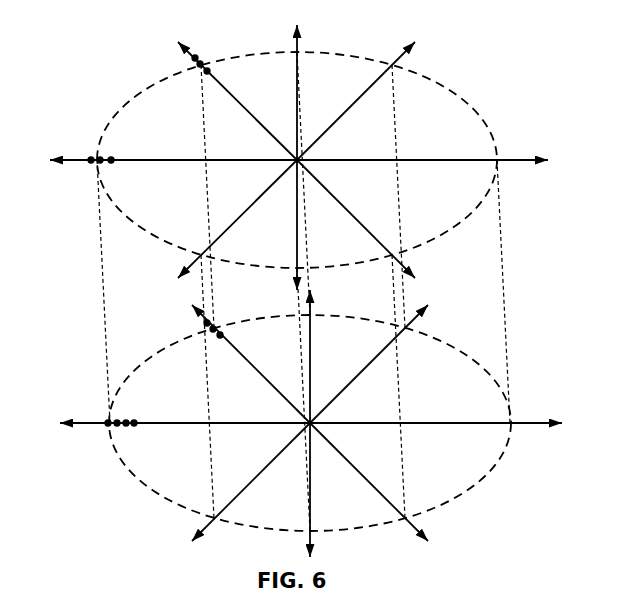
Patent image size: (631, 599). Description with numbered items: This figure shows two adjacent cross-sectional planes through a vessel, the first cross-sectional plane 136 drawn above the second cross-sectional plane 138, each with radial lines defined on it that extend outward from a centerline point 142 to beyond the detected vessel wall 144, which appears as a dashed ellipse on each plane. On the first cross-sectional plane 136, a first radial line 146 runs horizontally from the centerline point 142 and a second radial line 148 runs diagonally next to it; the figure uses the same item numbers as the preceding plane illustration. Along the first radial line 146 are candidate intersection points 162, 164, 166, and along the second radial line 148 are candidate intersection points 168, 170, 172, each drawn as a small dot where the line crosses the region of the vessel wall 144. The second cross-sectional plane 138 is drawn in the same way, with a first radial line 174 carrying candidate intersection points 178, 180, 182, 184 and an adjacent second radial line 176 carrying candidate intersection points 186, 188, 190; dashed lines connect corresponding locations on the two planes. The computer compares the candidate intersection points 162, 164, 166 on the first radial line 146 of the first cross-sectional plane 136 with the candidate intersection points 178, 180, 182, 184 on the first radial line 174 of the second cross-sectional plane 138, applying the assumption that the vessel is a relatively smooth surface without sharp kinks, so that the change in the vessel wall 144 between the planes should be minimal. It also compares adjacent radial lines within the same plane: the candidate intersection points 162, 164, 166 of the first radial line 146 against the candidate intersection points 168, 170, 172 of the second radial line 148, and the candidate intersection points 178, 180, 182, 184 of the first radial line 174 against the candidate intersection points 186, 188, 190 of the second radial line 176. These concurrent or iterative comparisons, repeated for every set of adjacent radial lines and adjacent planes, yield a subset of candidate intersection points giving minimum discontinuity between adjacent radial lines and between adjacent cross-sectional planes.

The first cross-sectional plane 136 is at (487, 45).
The second cross-sectional plane 138 is at (495, 325).
The centerline point 142 is at (302, 158).
The vessel wall 144 is at (474, 106).
The first radial line 146 is at (78, 163).
The second radial line 148 is at (190, 55).
The candidate intersection point 162 is at (91, 157).
The candidate intersection point 164 is at (99, 163).
The candidate intersection point 166 is at (110, 156).
The candidate intersection point 168 is at (197, 56).
The candidate intersection point 170 is at (199, 67).
The candidate intersection point 172 is at (208, 74).
The first radial line 174 is at (80, 426).
The second radial line 176 is at (233, 347).
The candidate intersection point 178 is at (116, 426).
The candidate intersection point 180 is at (108, 420).
The candidate intersection point 182 is at (126, 420).
The candidate intersection point 184 is at (133, 426).
The candidate intersection point 186 is at (206, 322).
The candidate intersection point 188 is at (212, 329).
The candidate intersection point 190 is at (220, 337).